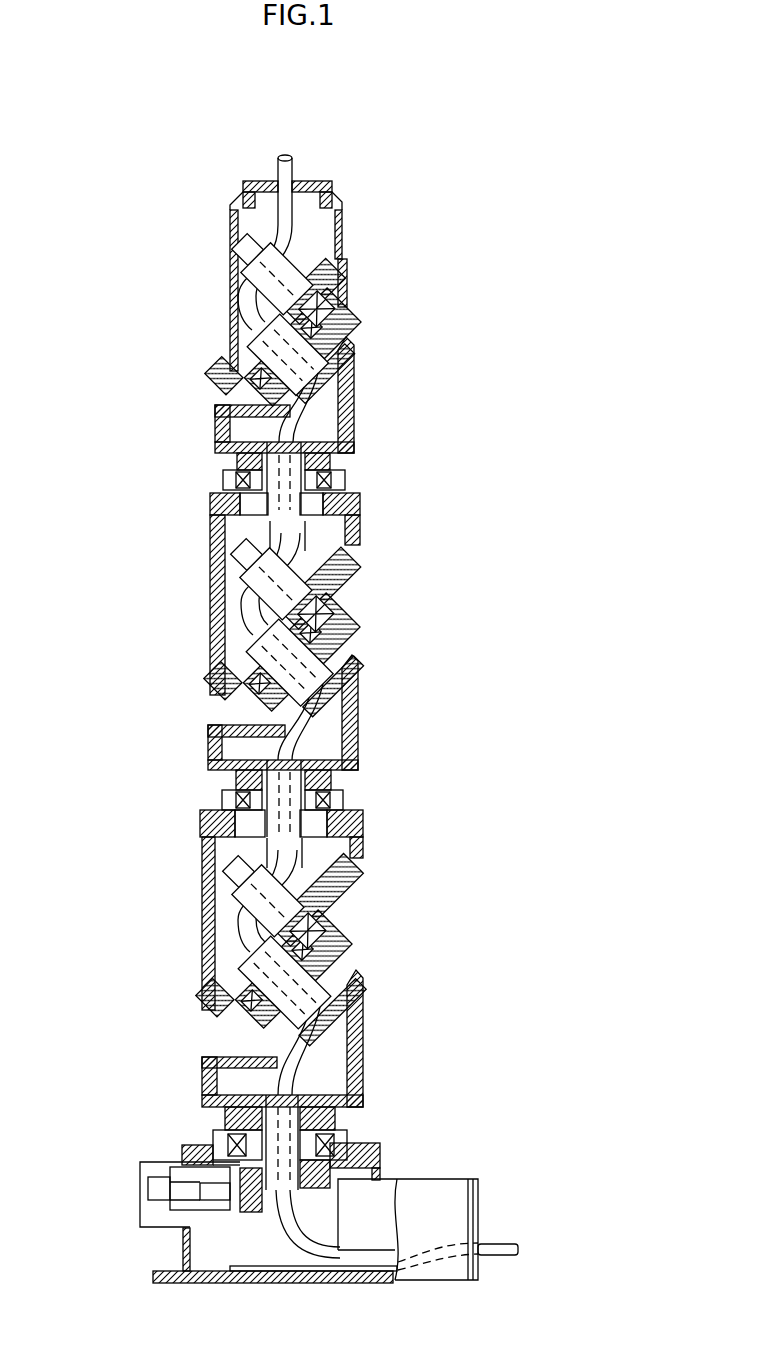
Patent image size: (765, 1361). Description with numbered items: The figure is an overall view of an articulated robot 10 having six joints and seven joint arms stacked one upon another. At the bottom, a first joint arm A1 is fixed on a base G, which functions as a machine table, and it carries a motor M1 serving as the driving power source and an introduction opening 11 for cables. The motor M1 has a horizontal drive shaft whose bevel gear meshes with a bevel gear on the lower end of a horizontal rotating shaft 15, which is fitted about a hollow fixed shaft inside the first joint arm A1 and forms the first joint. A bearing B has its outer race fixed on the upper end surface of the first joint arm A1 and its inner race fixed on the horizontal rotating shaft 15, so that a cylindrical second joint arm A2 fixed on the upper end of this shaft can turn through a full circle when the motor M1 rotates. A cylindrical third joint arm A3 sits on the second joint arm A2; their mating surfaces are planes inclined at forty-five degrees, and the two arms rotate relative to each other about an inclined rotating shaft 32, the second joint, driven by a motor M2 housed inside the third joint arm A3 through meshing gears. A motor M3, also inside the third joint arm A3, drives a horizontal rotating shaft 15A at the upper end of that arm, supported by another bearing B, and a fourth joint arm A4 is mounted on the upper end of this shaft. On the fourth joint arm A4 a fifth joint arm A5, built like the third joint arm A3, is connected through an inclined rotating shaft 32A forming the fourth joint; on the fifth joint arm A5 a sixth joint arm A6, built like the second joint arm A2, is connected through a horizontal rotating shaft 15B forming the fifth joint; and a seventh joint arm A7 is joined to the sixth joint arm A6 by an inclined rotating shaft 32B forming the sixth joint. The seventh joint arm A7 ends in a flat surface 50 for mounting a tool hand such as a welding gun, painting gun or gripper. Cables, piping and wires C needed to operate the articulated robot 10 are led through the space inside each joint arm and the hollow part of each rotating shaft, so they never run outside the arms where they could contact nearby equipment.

The articulated robot 10 is at (452, 184).
The flat surface 50 is at (312, 180).
The seventh joint arm A7 is at (226, 267).
The sixth joint arm A6 is at (358, 382).
The fifth joint arm A5 is at (204, 571).
The fourth joint arm A4 is at (366, 699).
The third joint arm A3 is at (188, 924).
The second joint arm A2 is at (198, 1075).
The first joint arm A1 is at (490, 1182).
The inclined rotating shaft 32B is at (335, 328).
The inclined rotating shaft 32A is at (335, 640).
The inclined rotating shaft 32 is at (356, 985).
The horizontal rotating shaft 15B is at (342, 468).
The horizontal rotating shaft 15A is at (338, 785).
The horizontal rotating shaft 15 is at (333, 1124).
The motor M1 is at (183, 1188).
The motor M2 is at (248, 878).
The motor M3 is at (303, 858).
The bearing B is at (328, 950).
The introduction opening 11 is at (450, 1217).
The base G is at (160, 1276).
The cables C is at (503, 1253).